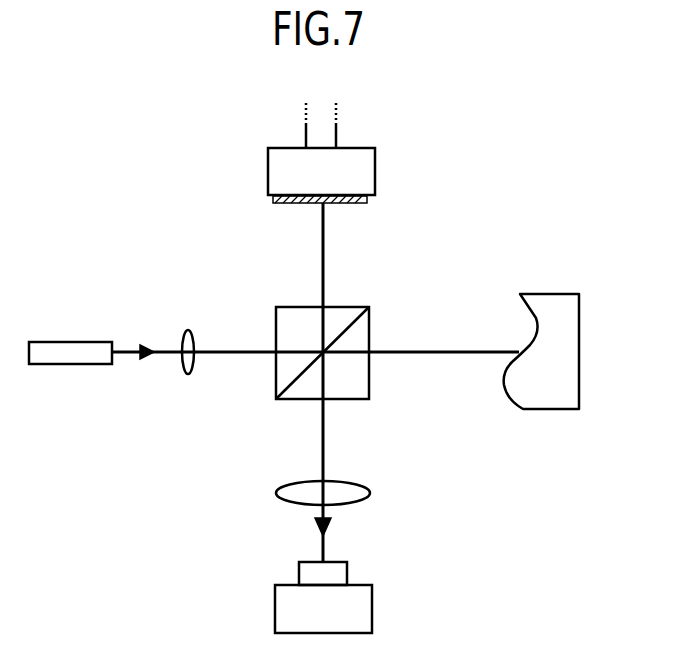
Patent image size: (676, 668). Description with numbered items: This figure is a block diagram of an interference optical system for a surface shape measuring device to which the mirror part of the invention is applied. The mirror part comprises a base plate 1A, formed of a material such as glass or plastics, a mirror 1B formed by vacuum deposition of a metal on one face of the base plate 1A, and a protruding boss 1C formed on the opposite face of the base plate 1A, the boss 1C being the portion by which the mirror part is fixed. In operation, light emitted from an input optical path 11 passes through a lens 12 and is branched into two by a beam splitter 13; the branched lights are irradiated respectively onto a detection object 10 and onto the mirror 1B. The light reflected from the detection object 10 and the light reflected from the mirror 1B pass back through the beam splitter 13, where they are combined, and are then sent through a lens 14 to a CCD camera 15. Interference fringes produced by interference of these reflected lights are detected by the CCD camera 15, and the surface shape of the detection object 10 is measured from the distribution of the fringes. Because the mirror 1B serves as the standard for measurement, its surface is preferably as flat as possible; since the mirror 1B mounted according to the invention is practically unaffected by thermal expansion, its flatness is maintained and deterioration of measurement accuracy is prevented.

The base plate 1A is at (378, 172).
The mirror 1B is at (362, 205).
The boss 1C is at (305, 138).
The detection object 10 is at (545, 410).
The input optical path 11 is at (65, 365).
The lens 12 is at (181, 375).
The beam splitter 13 is at (300, 400).
The lens 14 is at (370, 492).
The CCD camera 15 is at (375, 607).